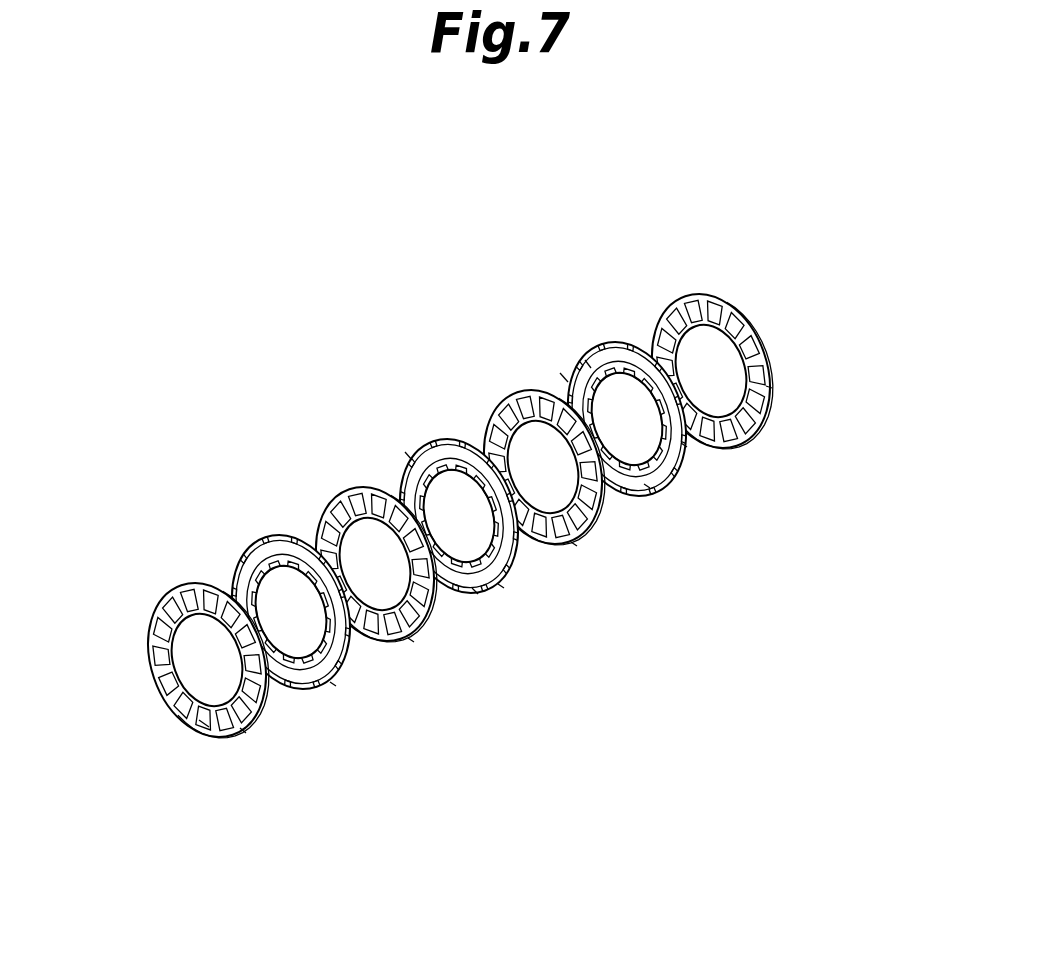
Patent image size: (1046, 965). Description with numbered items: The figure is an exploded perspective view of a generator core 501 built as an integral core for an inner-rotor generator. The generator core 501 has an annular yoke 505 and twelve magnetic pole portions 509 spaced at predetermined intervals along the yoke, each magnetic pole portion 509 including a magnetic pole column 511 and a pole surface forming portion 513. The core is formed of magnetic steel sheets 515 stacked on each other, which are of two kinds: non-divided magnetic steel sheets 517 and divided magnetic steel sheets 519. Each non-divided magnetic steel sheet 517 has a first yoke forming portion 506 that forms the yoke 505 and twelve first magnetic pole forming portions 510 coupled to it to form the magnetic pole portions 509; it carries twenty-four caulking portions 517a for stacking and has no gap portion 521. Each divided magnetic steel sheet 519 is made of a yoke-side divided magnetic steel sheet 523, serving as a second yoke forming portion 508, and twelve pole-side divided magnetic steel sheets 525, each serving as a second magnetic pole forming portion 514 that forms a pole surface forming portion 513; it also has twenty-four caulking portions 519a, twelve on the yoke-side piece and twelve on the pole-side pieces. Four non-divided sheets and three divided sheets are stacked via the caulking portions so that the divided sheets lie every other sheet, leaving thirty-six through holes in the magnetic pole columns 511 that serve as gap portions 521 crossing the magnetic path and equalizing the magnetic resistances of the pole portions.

The generator core 501 is at (458, 507).
The annular yoke 505 is at (173, 638).
The first yoke forming portion 506 is at (173, 660).
The second yoke forming portion 508 is at (629, 397).
The magnetic pole portion 509 is at (315, 518).
The first magnetic pole forming portion 510 is at (175, 660).
The magnetic pole column 511 is at (363, 540).
The pole surface forming portion 513 is at (588, 365).
The second magnetic pole forming portion 514 is at (664, 413).
The magnetic steel sheet 515 is at (243, 732).
The non-divided magnetic steel sheet 517 is at (160, 670).
The caulking portion 517a is at (203, 727).
The divided magnetic steel sheet 519 is at (245, 538).
The caulking portion 519a is at (408, 455).
The gap portion 521 is at (442, 445).
The yoke-side divided magnetic steel sheet 523 is at (563, 378).
The pole-side divided magnetic steel sheet 525 is at (678, 470).